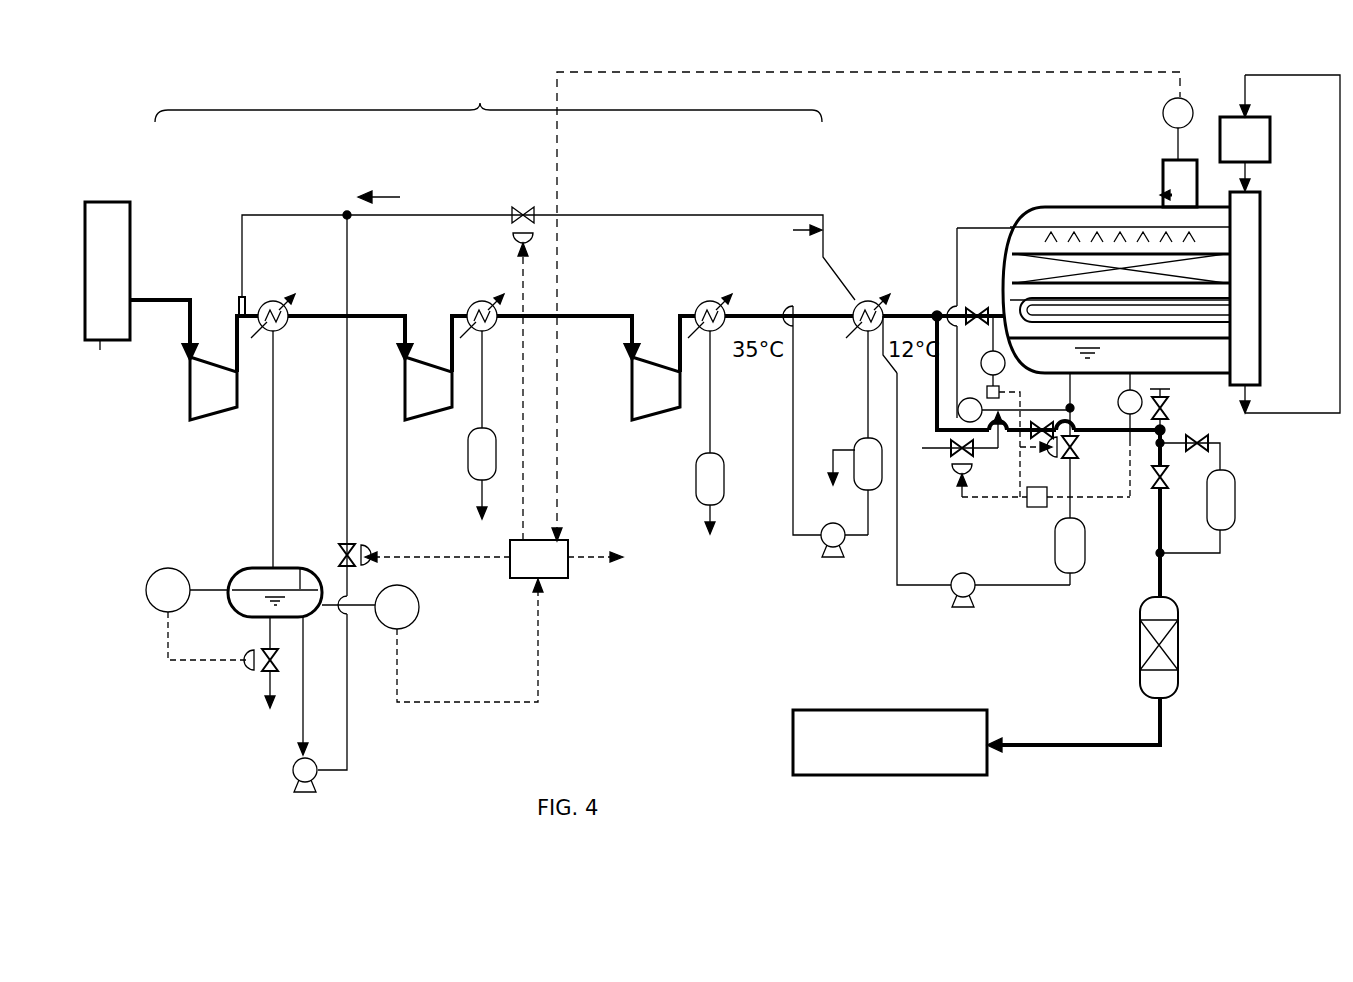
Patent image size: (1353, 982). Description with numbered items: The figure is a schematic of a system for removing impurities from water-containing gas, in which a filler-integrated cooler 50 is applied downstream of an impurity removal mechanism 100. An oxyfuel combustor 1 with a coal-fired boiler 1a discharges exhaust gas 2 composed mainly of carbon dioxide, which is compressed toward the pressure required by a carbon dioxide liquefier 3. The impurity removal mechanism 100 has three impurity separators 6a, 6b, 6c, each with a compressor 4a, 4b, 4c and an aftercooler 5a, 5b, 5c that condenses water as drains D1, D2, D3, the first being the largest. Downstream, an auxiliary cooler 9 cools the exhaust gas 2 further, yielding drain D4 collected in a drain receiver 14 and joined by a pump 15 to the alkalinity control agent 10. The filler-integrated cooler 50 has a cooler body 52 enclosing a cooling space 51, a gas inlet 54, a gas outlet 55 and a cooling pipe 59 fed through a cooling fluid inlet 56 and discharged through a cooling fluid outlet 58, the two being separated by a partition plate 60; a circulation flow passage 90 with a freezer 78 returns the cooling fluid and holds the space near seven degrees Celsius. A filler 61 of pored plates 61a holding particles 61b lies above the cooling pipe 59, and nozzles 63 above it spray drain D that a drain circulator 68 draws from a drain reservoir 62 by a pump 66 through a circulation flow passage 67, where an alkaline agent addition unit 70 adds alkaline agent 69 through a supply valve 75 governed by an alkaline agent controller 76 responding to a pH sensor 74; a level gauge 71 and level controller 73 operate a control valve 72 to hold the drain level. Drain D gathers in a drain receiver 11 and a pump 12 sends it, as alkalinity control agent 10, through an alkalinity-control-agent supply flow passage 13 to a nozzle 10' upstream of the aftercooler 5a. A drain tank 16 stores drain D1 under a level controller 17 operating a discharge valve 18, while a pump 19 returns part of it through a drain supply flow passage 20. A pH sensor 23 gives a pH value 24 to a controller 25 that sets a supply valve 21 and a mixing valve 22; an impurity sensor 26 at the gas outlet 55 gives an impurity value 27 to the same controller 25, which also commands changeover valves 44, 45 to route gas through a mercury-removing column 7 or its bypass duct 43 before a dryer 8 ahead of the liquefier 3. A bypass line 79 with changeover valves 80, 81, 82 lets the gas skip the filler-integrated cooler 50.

The oxyfuel combustor 1 is at (102, 195).
The coal-fired boiler 1a is at (100, 348).
The exhaust gas 2 is at (155, 298).
The carbon dioxide liquefier 3 is at (793, 740).
The compressor 4a is at (190, 420).
The compressor 4b is at (405, 420).
The compressor 4c is at (632, 420).
The aftercooler 5a is at (276, 333).
The aftercooler 5b is at (484, 333).
The aftercooler 5c is at (712, 333).
The impurity separator 6a is at (232, 300).
The impurity separator 6b is at (445, 300).
The impurity separator 6c is at (675, 300).
The mercury-removing column 7 is at (1237, 505).
The dryer 8 is at (1180, 690).
The auxiliary cooler 9 is at (862, 302).
The alkalinity control agent 10 is at (384, 172).
The nozzle 10' is at (277, 403).
The drain receiver 11 is at (1055, 552).
The pump 12 is at (950, 600).
The alkalinity-control-agent supply flow passage 13 is at (460, 213).
The drain receiver 14 is at (853, 445).
The pump 15 is at (828, 558).
The drain tank 16 is at (240, 565).
The level controller 17 is at (146, 590).
The discharge valve 18 is at (250, 685).
The pump 19 is at (292, 785).
The drain supply flow passage 20 is at (344, 426).
The supply valve 21 is at (525, 208).
The mixing valve 22 is at (385, 568).
The pH sensor 23 is at (420, 608).
The pH value 24 is at (470, 705).
The controller 25 is at (560, 580).
The impurity sensor 26 is at (1163, 110).
The impurity value 27 is at (888, 72).
The bypass duct 43 is at (1210, 558).
The changeover valve 44 is at (1152, 490).
The changeover valve 45 is at (1200, 460).
The filler-integrated cooler 50 is at (1005, 205).
The cooling space 51 is at (1088, 225).
The cooler body 52 is at (1133, 205).
The gas inlet 54 is at (1004, 330).
The gas outlet 55 is at (1198, 200).
The cooling fluid inlet 56 is at (1262, 190).
The cooling fluid outlet 58 is at (1262, 392).
The cooling pipe 59 is at (1003, 290).
The partition plate 60 is at (1245, 310).
The filler 61 is at (1300, 225).
The pored plates 61a is at (1235, 245).
The particles 61b is at (1235, 270).
The drain reservoir 62 is at (1182, 410).
The nozzles 63 is at (1055, 230).
The pump 66 is at (945, 408).
The circulation flow passage 67 is at (955, 240).
The drain circulator 68 is at (950, 255).
The alkaline agent 69 is at (945, 458).
The alkaline agent addition unit 70 is at (975, 515).
The level gauge 71 is at (982, 400).
The control valve 72 is at (1076, 456).
The level controller 73 is at (1002, 392).
The pH sensor 74 is at (1118, 400).
The supply valve 75 is at (958, 480).
The alkaline agent controller 76 is at (1030, 507).
The freezer 78 is at (1272, 120).
The bypass line 79 is at (1000, 440).
The changeover valve 80 is at (970, 316).
The changeover valve 81 is at (1075, 410).
The changeover valve 82 is at (1205, 440).
The circulation flow passage 90 is at (1300, 413).
The impurity removal mechanism 100 is at (488, 100).
The drain D is at (1030, 586).
The drain D1 is at (300, 568).
The drain D2 is at (472, 500).
The drain D3 is at (720, 508).
The drain D4 is at (868, 395).